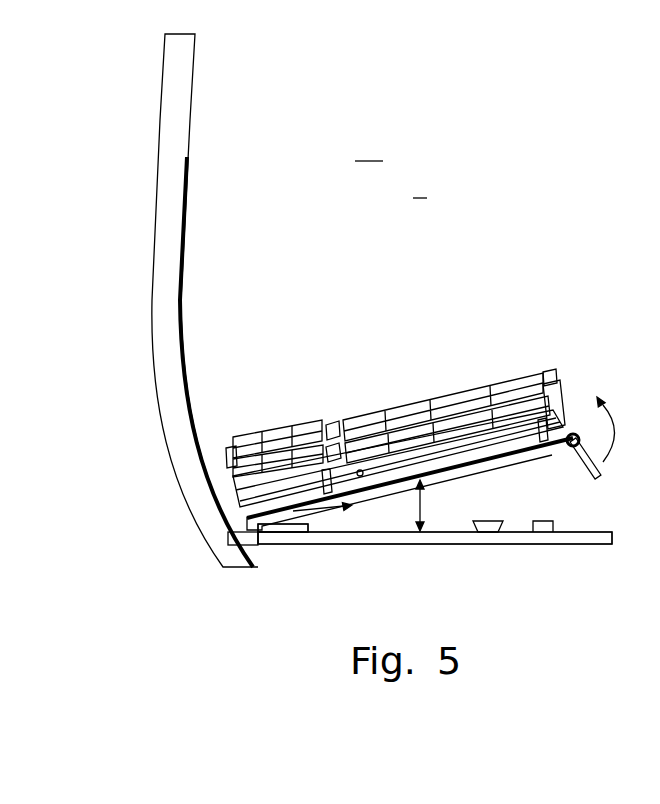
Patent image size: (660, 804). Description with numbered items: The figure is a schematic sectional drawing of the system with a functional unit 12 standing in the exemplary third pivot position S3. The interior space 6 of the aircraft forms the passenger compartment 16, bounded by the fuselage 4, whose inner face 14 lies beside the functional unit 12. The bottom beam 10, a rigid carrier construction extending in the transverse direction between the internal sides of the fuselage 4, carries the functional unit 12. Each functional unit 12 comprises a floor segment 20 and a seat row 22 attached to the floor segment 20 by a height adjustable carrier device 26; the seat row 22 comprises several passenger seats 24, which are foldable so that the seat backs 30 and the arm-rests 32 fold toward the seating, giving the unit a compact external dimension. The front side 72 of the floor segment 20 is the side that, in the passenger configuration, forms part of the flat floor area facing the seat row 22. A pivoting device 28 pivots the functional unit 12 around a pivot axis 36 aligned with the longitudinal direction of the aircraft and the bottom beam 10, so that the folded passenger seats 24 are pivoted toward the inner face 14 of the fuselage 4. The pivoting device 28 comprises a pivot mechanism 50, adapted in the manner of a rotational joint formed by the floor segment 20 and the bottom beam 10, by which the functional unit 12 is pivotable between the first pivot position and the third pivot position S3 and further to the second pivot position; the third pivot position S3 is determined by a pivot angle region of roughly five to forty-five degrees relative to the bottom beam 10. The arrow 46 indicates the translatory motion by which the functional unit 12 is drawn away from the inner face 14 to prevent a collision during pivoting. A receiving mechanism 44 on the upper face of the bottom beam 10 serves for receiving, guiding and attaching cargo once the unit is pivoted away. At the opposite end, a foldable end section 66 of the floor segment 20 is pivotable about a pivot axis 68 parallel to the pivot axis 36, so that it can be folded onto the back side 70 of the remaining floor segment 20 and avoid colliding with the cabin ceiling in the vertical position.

The fuselage 4 is at (163, 92).
The inner face of the fuselage 14 is at (192, 199).
The passenger compartment 16 is at (369, 149).
The interior space 6 is at (420, 186).
The bottom beam 10 is at (557, 248).
The third pivot position S3 is at (593, 333).
The seat row 22 is at (363, 393).
The passenger seat 24 is at (407, 397).
The arm-rest 32 is at (441, 397).
The seat back 30 is at (467, 446).
The front side 72 is at (506, 436).
The functional unit 12 is at (544, 353).
The pivot axis 68 is at (574, 432).
The receiving mechanism 44 is at (494, 512).
The back side 70 is at (543, 458).
The end section 66 is at (577, 468).
The pivot mechanism 50 is at (243, 545).
The pivoting device 28 is at (266, 532).
The pivot axis 36 is at (295, 576).
The arrow 46 is at (353, 544).
The carrier device 26 is at (333, 517).
The floor segment 20 is at (484, 544).